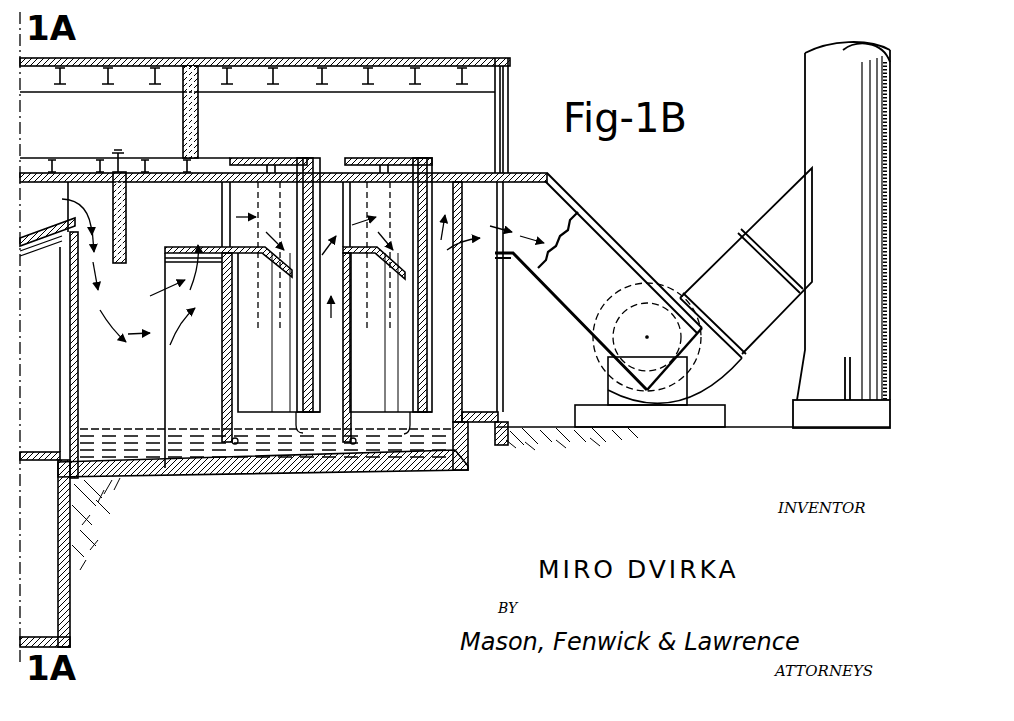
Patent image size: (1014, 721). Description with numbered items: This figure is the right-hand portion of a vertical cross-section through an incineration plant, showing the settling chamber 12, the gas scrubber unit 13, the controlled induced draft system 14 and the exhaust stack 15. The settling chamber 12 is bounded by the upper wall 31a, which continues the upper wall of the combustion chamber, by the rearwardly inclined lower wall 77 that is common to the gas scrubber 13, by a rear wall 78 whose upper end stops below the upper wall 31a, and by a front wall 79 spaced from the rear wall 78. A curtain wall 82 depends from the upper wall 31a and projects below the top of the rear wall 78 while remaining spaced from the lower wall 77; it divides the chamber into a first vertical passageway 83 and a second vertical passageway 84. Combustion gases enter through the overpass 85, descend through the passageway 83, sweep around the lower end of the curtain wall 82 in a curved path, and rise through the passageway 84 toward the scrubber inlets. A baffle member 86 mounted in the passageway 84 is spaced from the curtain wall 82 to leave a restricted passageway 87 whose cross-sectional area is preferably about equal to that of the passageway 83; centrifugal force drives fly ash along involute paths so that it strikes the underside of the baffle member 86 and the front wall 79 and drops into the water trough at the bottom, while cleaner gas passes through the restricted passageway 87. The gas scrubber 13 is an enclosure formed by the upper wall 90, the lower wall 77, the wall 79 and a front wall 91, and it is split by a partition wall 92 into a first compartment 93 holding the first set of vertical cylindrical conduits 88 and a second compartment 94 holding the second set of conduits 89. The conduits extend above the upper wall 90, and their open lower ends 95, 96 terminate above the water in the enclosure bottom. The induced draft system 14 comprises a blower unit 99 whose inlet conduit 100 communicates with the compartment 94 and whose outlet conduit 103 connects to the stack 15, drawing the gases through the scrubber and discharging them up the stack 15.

The settling chamber 12 is at (140, 190).
The gas scrubber unit 13 is at (322, 194).
The controlled induced draft system 14 is at (652, 280).
The exhaust stack 15 is at (800, 93).
The upper wall 31a is at (165, 186).
The rearwardly inclined wall 77 is at (221, 480).
The rear wall 78 is at (78, 371).
The front wall 79 is at (221, 368).
The curtain wall 82 is at (104, 268).
The first vertical passageway 83 is at (86, 258).
The second vertical passageway 84 is at (170, 224).
The overpass 85 is at (53, 212).
The baffle member 86 is at (163, 303).
The restricted passageway 87 is at (228, 249).
The first set of vertical cylindrical conduits 88 is at (258, 158).
The second set of vertical cylindrical conduits 89 is at (420, 172).
The upper wall 90 is at (446, 173).
The front wall 91 is at (461, 323).
The partition wall 92 is at (350, 330).
The first compartment 93 is at (328, 370).
The second compartment 94 is at (440, 348).
The lower end of conduit 95 is at (308, 428).
The lower end of conduit 96 is at (414, 428).
The blower unit 99 is at (600, 362).
The inlet conduit 100 is at (603, 223).
The outlet conduit 103 is at (774, 209).